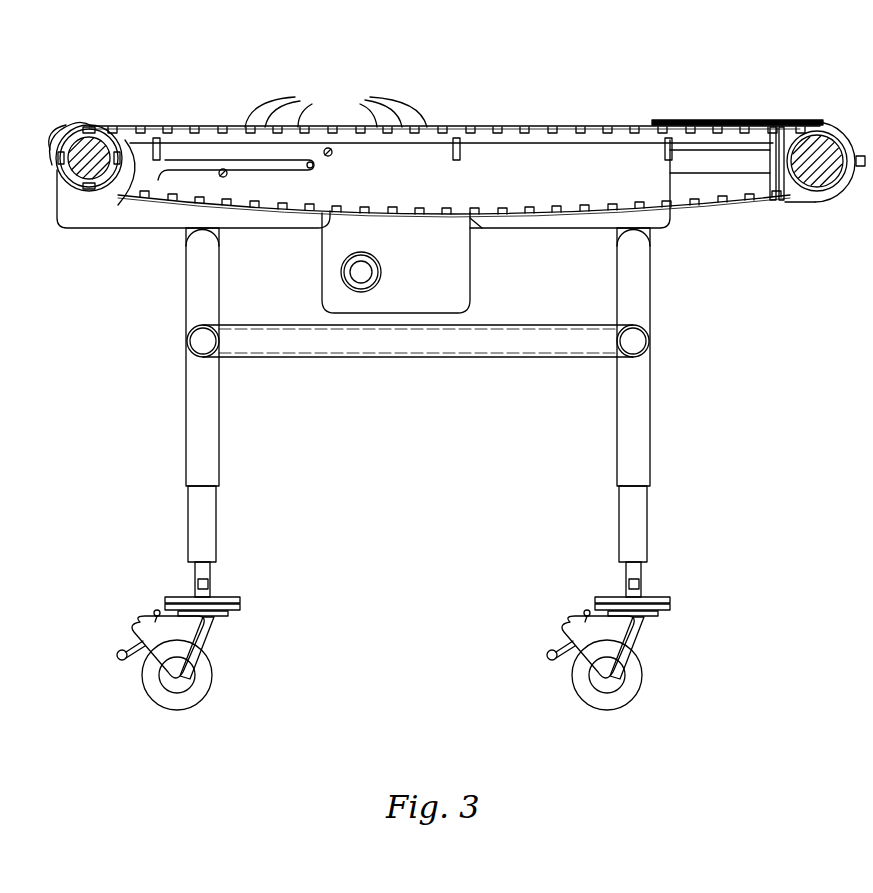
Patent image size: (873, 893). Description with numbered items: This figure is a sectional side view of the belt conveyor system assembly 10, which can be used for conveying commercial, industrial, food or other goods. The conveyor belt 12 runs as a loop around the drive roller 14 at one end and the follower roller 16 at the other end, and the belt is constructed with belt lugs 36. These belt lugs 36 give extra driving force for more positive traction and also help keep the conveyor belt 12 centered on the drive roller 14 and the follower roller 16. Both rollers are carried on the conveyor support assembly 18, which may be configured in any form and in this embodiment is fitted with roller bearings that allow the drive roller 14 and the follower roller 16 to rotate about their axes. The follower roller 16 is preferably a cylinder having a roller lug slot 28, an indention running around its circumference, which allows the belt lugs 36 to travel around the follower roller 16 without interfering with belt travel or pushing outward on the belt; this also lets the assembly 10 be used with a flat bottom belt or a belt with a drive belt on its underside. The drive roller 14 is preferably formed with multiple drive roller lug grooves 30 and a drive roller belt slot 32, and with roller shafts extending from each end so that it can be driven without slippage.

The belt conveyor system assembly 10 is at (496, 66).
The conveyor belt 12 is at (562, 126).
The drive roller 14 is at (105, 150).
The follower roller 16 is at (816, 145).
The conveyor support assembly 18 is at (687, 292).
The roller lug slot 28 is at (805, 192).
The drive roller lug grooves 30 is at (112, 205).
The drive roller belt slot 32 is at (66, 142).
The belt lugs 36 is at (372, 104).